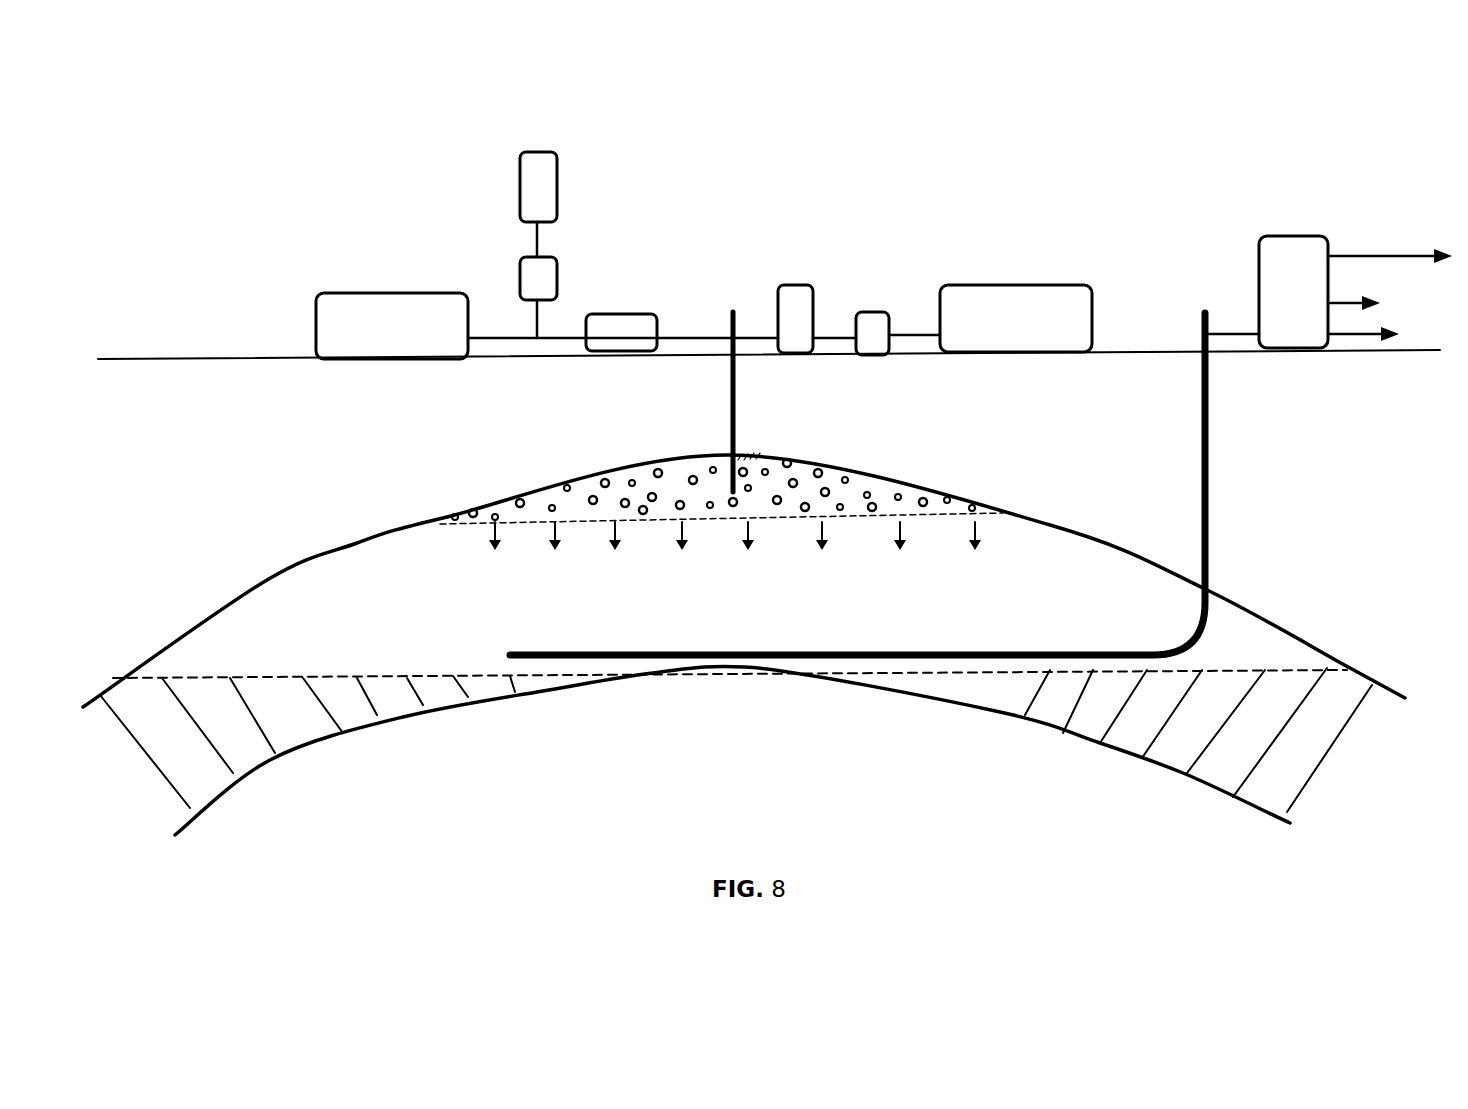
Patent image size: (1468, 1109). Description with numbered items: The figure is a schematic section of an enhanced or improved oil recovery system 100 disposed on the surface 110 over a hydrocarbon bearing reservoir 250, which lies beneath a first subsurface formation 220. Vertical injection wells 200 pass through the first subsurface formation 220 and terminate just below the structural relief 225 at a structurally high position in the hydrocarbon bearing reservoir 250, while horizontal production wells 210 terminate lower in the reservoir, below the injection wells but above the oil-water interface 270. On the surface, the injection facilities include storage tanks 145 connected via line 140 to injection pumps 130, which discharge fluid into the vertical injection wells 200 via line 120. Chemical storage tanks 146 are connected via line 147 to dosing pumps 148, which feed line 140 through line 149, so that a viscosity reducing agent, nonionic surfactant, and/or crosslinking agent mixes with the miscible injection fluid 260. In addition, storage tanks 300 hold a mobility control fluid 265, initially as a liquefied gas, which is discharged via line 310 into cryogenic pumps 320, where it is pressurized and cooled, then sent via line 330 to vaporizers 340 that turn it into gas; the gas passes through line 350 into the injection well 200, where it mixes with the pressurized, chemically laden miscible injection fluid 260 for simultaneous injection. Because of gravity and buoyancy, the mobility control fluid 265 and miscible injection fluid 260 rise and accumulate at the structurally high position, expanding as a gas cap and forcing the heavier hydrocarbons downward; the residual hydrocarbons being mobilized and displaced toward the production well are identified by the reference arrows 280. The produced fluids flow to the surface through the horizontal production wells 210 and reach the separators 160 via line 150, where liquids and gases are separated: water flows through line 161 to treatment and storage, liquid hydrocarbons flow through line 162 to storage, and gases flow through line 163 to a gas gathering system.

The enhanced oil recovery system 100 is at (946, 193).
The surface 110 is at (220, 357).
The line 120 is at (690, 335).
The injection pumps 130 is at (662, 289).
The line 140 is at (537, 221).
The storage tanks 145 is at (348, 292).
The chemical storage tanks 146 is at (549, 152).
The line 147 is at (540, 237).
The dosing pumps 148 is at (557, 267).
The line 149 is at (540, 320).
The line 150 is at (1242, 333).
The separators 160 is at (1259, 243).
The line 161 is at (1368, 253).
The line 162 is at (1347, 300).
The line 163 is at (1363, 333).
The vertical injection wells 200 is at (738, 312).
The horizontal production wells 210 is at (1202, 315).
The first subsurface formation 220 is at (247, 467).
The structural relief 225 is at (362, 538).
The hydrocarbon bearing reservoir 250 is at (333, 640).
The miscible injection fluid 260 is at (823, 462).
The mobility control fluid 265 is at (898, 493).
The oil-water interface 270 is at (1245, 668).
The reference arrows 280 is at (982, 530).
The storage tanks 300 is at (992, 285).
The line 310 is at (905, 332).
The cryogenic pumps 320 is at (872, 312).
The line 330 is at (822, 335).
The vaporizers 340 is at (797, 285).
The line 350 is at (758, 335).